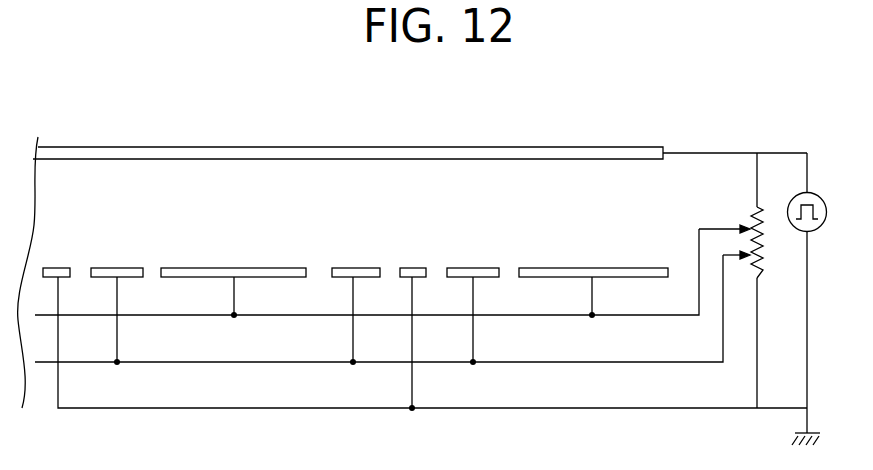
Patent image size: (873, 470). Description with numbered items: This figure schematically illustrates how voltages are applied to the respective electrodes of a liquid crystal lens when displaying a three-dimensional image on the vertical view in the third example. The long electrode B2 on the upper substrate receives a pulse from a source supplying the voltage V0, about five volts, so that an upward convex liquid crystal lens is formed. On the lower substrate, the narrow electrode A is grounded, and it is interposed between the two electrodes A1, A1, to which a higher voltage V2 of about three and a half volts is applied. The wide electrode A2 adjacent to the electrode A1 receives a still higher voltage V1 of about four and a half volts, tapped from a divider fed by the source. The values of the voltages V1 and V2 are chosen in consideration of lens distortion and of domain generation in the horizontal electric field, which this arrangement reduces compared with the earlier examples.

The electrode B2 is at (402, 146).
The electrode A1 is at (346, 266).
The electrode A is at (412, 266).
The electrode A2 is at (579, 266).
The voltage V0 is at (816, 198).
The voltage V1 is at (724, 216).
The voltage V2 is at (738, 270).